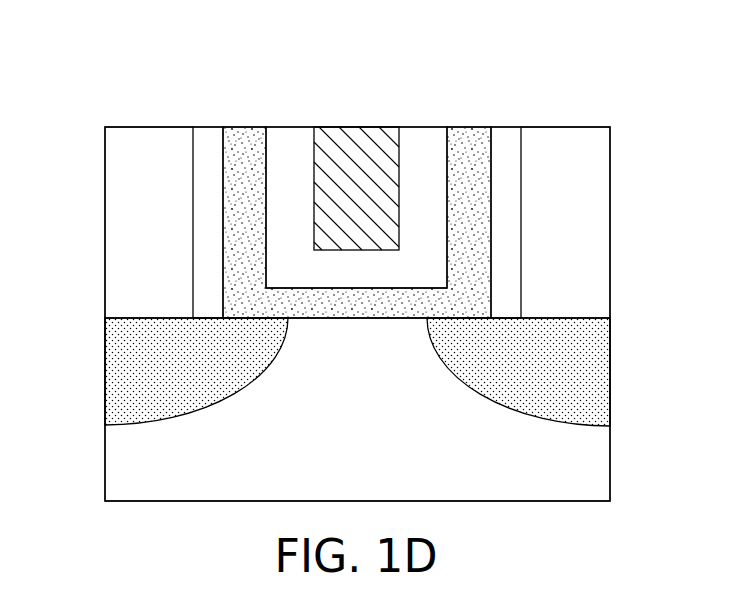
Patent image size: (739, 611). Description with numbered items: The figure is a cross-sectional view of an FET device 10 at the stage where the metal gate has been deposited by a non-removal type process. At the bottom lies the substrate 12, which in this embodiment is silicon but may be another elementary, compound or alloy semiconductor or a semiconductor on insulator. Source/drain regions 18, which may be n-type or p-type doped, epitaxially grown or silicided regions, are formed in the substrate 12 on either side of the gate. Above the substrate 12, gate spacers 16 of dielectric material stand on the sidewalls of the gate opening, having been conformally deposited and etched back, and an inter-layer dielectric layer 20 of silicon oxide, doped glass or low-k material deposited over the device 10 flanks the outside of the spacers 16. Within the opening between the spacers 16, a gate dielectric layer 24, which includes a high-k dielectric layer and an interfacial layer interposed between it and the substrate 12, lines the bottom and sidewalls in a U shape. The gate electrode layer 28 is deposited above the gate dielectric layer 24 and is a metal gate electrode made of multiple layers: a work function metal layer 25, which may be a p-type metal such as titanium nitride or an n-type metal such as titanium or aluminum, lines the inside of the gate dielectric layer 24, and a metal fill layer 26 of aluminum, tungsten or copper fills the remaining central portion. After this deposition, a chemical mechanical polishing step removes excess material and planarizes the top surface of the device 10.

The FET device 10 is at (72, 121).
The substrate 12 is at (603, 466).
The gate spacers 16 is at (508, 135).
The source/drain regions 18 is at (105, 371).
The inter-layer dielectric layer 20 is at (562, 135).
The gate dielectric layer 24 is at (470, 135).
The work function metal layer 25 is at (423, 137).
The metal fill layer 26 is at (357, 137).
The gate electrode layer 28 is at (343, 82).